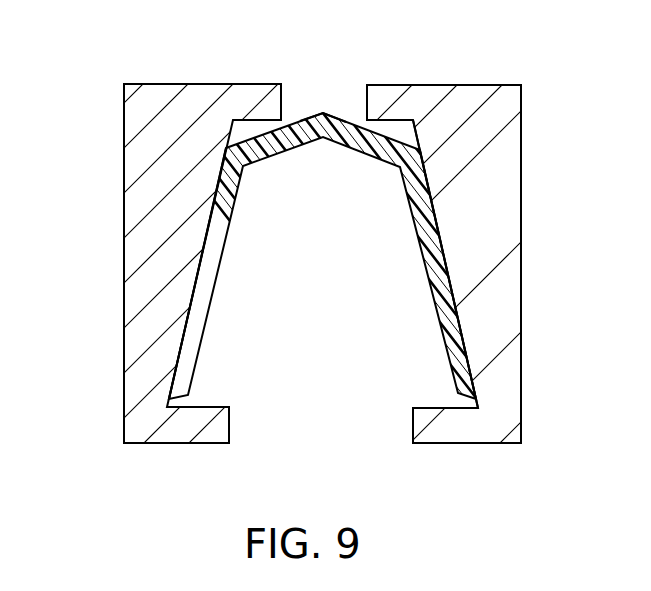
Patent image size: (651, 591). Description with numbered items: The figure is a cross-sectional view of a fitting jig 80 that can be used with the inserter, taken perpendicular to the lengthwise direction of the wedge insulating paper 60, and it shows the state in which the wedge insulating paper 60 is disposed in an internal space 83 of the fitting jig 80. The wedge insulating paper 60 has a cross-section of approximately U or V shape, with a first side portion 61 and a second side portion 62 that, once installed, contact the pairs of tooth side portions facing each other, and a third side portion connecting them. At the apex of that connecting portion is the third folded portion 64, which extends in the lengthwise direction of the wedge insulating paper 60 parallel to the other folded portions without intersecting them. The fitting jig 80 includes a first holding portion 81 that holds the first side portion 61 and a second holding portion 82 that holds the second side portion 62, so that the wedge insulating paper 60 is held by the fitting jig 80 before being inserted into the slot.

The fitting jig 80 is at (118, 349).
The first holding portion 81 is at (477, 409).
The second holding portion 82 is at (167, 404).
The internal space 83 is at (332, 376).
The wedge insulating paper 60 is at (410, 246).
The first side portion 61 is at (430, 215).
The second side portion 62 is at (207, 241).
The third folded portion 64 is at (323, 113).